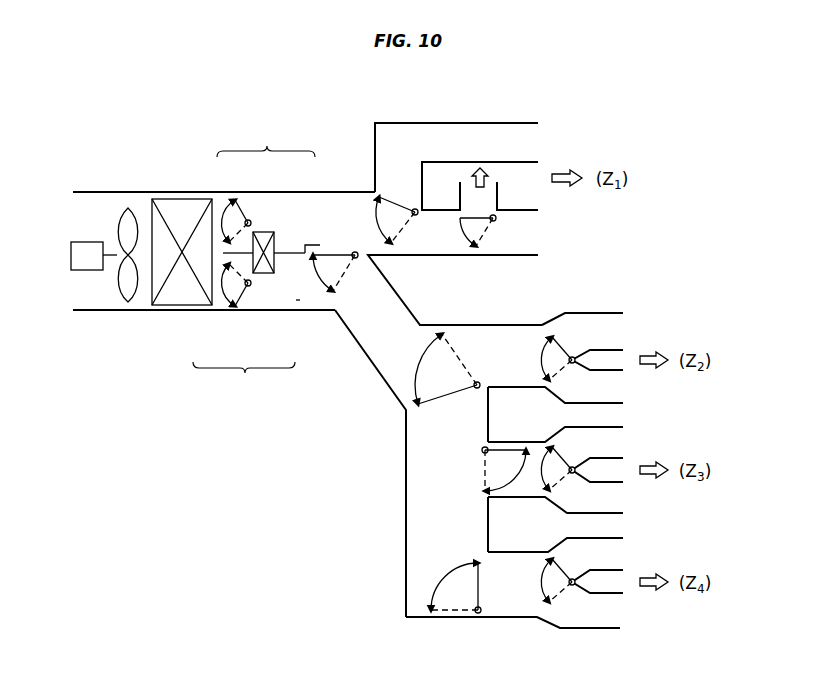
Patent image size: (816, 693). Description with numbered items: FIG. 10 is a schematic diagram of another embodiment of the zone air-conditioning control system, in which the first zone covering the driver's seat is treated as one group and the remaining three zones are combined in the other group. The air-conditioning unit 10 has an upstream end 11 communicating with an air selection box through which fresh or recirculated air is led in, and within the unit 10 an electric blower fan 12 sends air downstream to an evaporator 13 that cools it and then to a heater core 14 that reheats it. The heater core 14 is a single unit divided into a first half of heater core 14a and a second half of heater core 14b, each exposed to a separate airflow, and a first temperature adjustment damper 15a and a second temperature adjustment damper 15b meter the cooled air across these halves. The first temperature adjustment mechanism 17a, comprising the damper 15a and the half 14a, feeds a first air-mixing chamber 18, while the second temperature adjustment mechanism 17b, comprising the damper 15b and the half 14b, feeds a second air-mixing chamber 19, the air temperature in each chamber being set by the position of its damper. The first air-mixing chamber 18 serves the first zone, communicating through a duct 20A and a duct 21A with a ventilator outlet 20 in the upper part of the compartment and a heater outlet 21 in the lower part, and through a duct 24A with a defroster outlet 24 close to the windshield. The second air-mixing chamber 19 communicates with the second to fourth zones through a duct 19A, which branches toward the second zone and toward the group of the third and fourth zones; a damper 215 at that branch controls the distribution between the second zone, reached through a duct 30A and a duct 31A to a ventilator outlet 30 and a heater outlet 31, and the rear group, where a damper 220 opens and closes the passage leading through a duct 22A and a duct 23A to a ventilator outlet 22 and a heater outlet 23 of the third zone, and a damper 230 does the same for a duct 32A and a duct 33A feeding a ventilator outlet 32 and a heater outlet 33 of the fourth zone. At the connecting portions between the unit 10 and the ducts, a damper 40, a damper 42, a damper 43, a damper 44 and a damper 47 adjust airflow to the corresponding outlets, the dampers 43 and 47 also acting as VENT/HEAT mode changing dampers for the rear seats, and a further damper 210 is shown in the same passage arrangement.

The air-conditioning unit 10 is at (112, 192).
The upstream end 11 is at (83, 242).
The electric blower fan 12 is at (137, 214).
The evaporator 13 is at (185, 199).
The heater core 14 is at (282, 270).
The first half of heater core 14a is at (268, 232).
The second half of heater core 14b is at (263, 276).
The first temperature adjustment damper 15a is at (247, 208).
The second temperature adjustment damper 15b is at (238, 311).
The first temperature adjustment mechanism 17a is at (266, 141).
The second temperature adjustment mechanism 17b is at (244, 380).
The first air-mixing chamber 18 is at (287, 233).
The second air-mixing chamber 19 is at (290, 299).
The duct 19A is at (360, 348).
The ventilator outlet 20 is at (538, 138).
The duct 20A is at (462, 123).
The heater outlet 21 is at (538, 236).
The duct 21A is at (510, 256).
The ventilator outlet 22 is at (613, 440).
The duct 22A is at (590, 426).
The heater outlet 23 is at (612, 498).
The duct 23A is at (610, 517).
The defroster outlet 24 is at (490, 186).
The duct 24A is at (500, 195).
The ventilator outlet 30 is at (613, 330).
The duct 30A is at (600, 313).
The heater outlet 31 is at (613, 388).
The duct 31A is at (607, 405).
The ventilator outlet 32 is at (612, 555).
The duct 32A is at (590, 538).
The heater outlet 33 is at (612, 608).
The duct 33A is at (593, 628).
The damper 40 is at (393, 203).
The damper 42 is at (460, 194).
The damper 43 is at (553, 446).
The damper 44 is at (573, 352).
The damper 47 is at (563, 563).
The damper 210 is at (338, 250).
The damper 215 is at (445, 402).
The damper 220 is at (507, 449).
The damper 230 is at (483, 587).